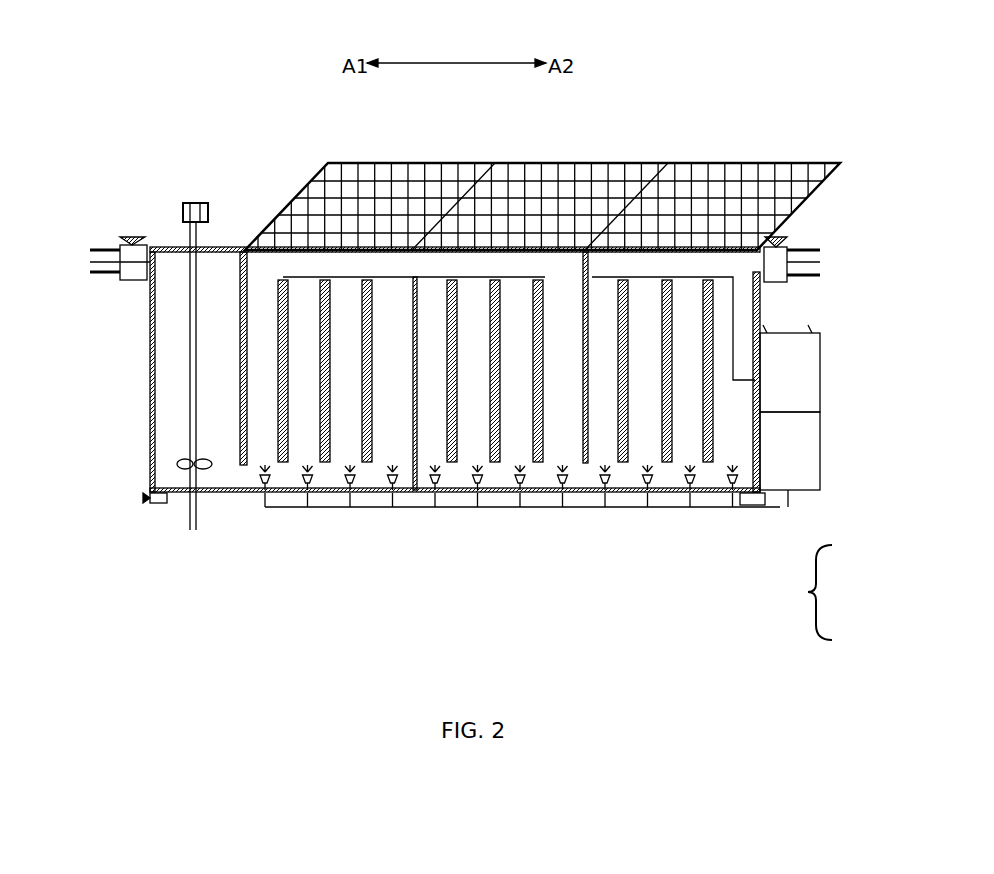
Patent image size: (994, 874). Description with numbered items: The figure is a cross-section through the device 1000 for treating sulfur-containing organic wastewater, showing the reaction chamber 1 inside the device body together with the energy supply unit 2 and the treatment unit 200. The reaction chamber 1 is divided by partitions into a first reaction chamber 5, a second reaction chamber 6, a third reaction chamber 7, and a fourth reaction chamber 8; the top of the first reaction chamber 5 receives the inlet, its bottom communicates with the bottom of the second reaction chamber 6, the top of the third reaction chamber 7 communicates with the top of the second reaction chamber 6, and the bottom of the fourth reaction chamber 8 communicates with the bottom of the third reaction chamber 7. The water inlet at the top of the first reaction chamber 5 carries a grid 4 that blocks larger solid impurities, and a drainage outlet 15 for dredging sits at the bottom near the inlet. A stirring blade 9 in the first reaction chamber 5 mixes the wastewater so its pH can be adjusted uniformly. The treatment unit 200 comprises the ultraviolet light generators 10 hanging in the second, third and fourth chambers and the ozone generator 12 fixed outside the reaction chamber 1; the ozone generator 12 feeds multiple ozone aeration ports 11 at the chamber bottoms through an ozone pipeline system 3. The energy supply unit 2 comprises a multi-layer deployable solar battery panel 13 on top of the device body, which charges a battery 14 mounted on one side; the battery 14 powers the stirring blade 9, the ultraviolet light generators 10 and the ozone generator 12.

The device for treating sulfur-containing organic wastewater 1000 is at (180, 160).
The reaction chamber 1 is at (475, 387).
The energy supply unit 2 is at (585, 163).
The ozone pipeline system 3 is at (780, 506).
The grid 4 is at (100, 262).
The first reaction chamber 5 is at (180, 372).
The second reaction chamber 6 is at (307, 388).
The third reaction chamber 7 is at (432, 388).
The fourth reaction chamber 8 is at (603, 388).
The stirring blade 9 is at (196, 376).
The ultraviolet light generator 10 is at (665, 462).
The ozone aeration port 11 is at (732, 483).
The ozone generator 12 is at (788, 453).
The solar battery panel 13 is at (760, 205).
The battery 14 is at (788, 378).
The drainage outlet 15 is at (153, 503).
The treatment unit 200 is at (814, 596).